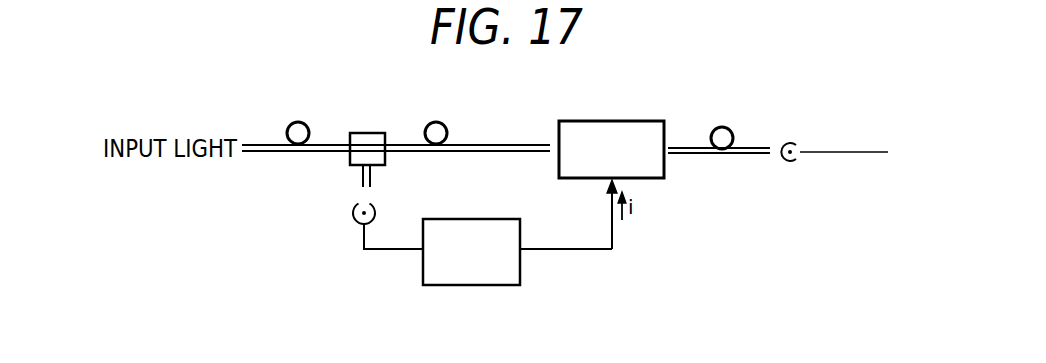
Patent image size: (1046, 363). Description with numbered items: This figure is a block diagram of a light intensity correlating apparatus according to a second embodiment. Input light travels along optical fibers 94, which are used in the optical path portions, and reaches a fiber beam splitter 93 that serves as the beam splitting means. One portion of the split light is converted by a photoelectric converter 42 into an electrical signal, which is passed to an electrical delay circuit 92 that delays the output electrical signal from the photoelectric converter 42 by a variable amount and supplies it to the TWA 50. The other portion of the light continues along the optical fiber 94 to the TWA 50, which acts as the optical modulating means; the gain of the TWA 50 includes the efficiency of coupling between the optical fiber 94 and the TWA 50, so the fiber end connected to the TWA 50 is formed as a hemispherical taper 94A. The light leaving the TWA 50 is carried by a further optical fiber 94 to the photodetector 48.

The optical fiber 94 is at (300, 121).
The hemispherical taper 94A is at (545, 157).
The fiber beam splitter 93 is at (370, 133).
The TWA 50 is at (650, 120).
The electrical delay circuit 92 is at (502, 286).
The photoelectric converter 42 is at (352, 212).
The photodetector 48 is at (795, 143).